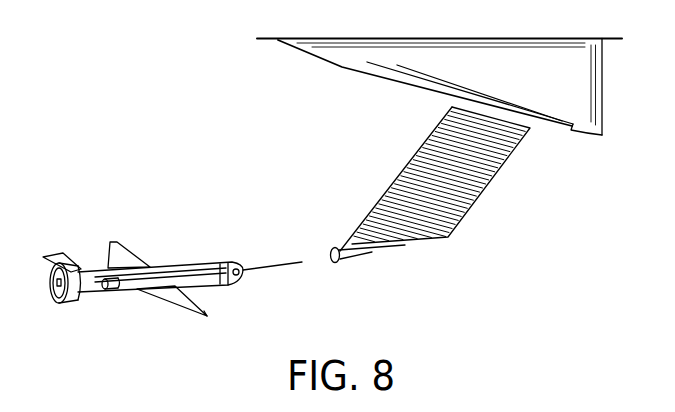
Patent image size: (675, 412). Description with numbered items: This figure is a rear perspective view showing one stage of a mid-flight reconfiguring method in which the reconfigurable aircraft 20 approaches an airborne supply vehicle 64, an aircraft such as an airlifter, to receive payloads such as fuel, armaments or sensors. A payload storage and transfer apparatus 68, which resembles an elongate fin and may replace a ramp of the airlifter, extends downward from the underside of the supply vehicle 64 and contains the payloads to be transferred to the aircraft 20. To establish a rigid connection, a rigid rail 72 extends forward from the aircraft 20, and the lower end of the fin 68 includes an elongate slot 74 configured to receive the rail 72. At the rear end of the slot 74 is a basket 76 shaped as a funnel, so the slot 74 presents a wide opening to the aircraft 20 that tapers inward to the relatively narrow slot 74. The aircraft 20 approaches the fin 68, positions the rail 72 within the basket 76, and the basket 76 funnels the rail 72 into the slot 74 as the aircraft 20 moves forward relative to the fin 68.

The reconfigurable aircraft 20 is at (190, 266).
The airborne supply vehicle 64 is at (551, 88).
The payload storage and transfer apparatus 68 is at (404, 172).
The rigid rail 72 is at (280, 267).
The elongate slot 74 is at (363, 253).
The basket 76 is at (336, 248).